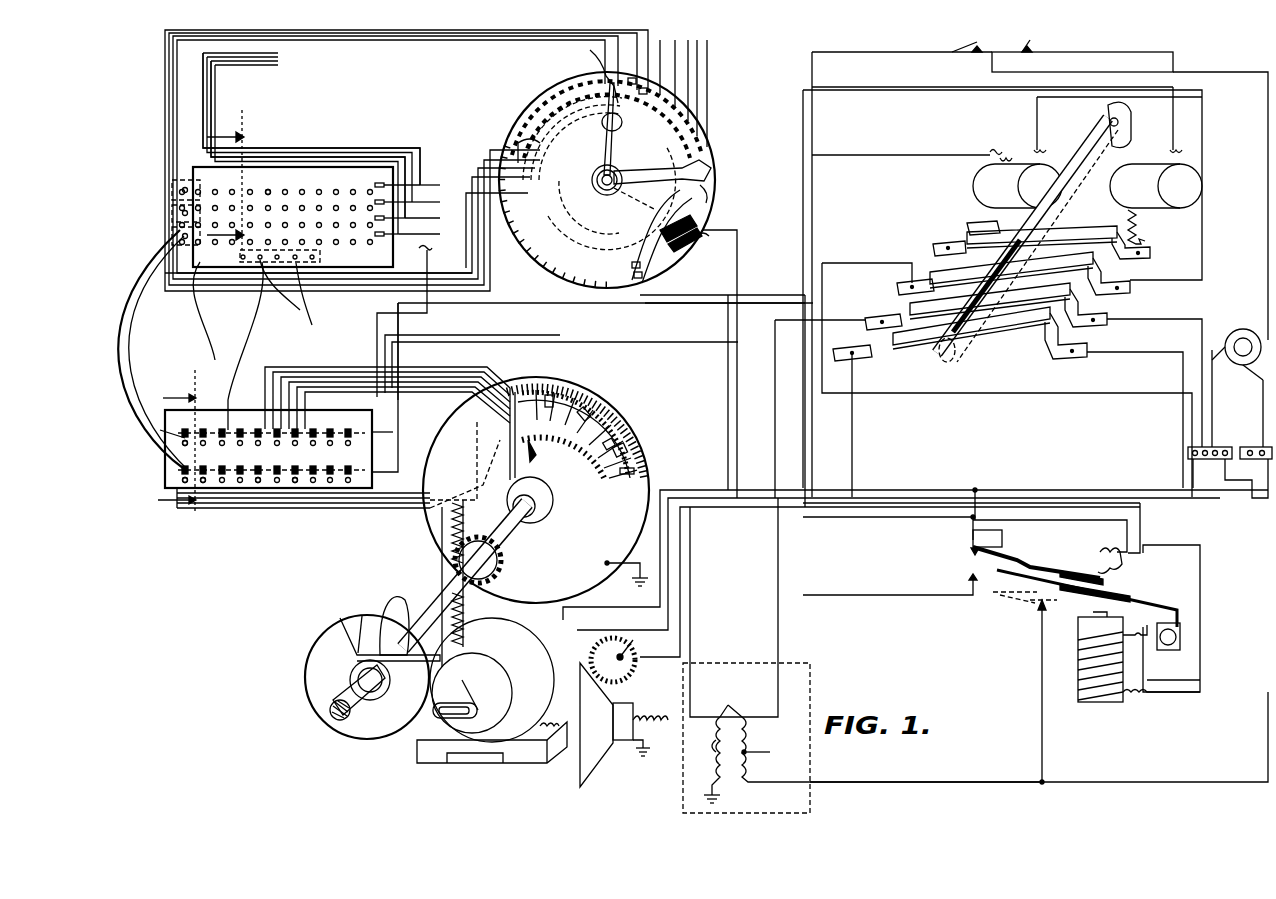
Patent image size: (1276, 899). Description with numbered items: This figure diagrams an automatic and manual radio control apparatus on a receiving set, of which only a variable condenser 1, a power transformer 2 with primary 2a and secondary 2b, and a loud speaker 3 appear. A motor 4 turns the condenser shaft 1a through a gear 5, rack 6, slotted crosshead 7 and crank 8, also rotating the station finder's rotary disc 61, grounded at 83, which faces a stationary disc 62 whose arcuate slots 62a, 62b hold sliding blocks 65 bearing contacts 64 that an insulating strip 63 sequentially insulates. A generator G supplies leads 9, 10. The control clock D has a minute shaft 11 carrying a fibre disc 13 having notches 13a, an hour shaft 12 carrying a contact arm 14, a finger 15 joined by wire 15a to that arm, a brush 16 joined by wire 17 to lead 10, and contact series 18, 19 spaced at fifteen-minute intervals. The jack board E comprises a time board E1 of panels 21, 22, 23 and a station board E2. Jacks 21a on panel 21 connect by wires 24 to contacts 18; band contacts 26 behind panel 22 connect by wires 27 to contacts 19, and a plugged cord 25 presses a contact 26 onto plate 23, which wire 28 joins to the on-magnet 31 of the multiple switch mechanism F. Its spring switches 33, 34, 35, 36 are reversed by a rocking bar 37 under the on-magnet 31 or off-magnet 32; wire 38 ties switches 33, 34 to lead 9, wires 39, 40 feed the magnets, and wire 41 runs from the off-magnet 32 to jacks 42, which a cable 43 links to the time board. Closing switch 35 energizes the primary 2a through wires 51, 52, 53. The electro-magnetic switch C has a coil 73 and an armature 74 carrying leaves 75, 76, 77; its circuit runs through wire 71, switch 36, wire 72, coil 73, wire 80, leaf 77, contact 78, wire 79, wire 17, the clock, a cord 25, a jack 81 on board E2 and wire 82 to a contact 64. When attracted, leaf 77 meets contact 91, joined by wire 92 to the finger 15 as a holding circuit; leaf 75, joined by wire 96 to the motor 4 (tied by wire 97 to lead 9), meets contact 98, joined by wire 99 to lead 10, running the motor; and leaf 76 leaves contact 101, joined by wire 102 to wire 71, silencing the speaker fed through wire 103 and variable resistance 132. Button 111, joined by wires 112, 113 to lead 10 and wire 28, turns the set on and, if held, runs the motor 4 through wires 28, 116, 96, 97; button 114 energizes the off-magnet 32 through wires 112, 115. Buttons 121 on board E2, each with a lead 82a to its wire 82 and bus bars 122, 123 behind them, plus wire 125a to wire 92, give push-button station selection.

The rotary variable condenser 1 is at (372, 668).
The shaft of the condenser 1a is at (340, 700).
The power transformer 2 is at (225, 179).
The primary of the transformer 2a is at (767, 751).
The secondary of the transformer 2b is at (716, 748).
The loud speaker 3 is at (624, 725).
The controlled motor 4 is at (492, 690).
The gear 5 is at (492, 570).
The rack 6 is at (442, 570).
The slotted crosshead 7 is at (433, 710).
The crank 8 is at (172, 449).
The lead 9 is at (1215, 447).
The lead 10 is at (1252, 447).
The minute shaft 11 is at (600, 188).
The hour shaft 12 is at (595, 182).
The fibre disc 13 is at (690, 163).
The notches 13a is at (565, 223).
The contact arm 14 is at (600, 165).
The finger 15 is at (700, 230).
The wire 15a is at (705, 205).
The resilient brush 16 is at (648, 268).
The wire 17 is at (718, 296).
The contacts 18 is at (667, 98).
The contacts 19 is at (683, 108).
The panel 21 is at (325, 160).
The jacks 21a is at (268, 190).
The panel 22 is at (345, 160).
The conducting plate 23 is at (380, 150).
The wire 24 is at (165, 84).
The cords 25 is at (195, 320).
The flexible band contacts 26 is at (170, 150).
The wire 27 is at (475, 160).
The wire 28 is at (433, 252).
The on-magnet 31 is at (1156, 186).
The off-magnet 32 is at (1017, 183).
The spring switch 33 is at (1062, 232).
The spring switch 34 is at (1055, 262).
The spring switch 35 is at (1040, 296).
The spring switch 36 is at (1015, 330).
The rocking bar 37 is at (1093, 128).
The wire 38 is at (890, 268).
The wire 39 is at (1144, 232).
The wire 40 is at (1037, 126).
The wire 41 is at (583, 318).
The jacks 42 is at (289, 292).
The cable 43 is at (308, 303).
The wire 51 is at (1268, 638).
The wire 52 is at (855, 314).
The wire 53 is at (1146, 316).
The rotary disc 61 is at (536, 490).
The stationary disc 62 is at (612, 425).
The arcuate slot 62a is at (622, 440).
The arcuate slot 62b is at (636, 472).
The insulating strip 63 is at (554, 492).
The electric contacts 64 is at (600, 400).
The sliding blocks 65 is at (550, 398).
The wire 71 is at (852, 418).
The wire 72 is at (1122, 356).
The coil 73 is at (1100, 702).
The armature 74 is at (1185, 605).
The flexible switch member 75 is at (1025, 605).
The flexible switch member 76 is at (995, 582).
The flexible switch member 77 is at (973, 552).
The contact 78 is at (973, 540).
The wire 79 is at (975, 498).
The wire 80 is at (1160, 560).
The jack 81 is at (295, 483).
The wire 82 is at (340, 505).
The lead 82a is at (212, 520).
The ground 83 is at (622, 563).
The contact 91 is at (960, 585).
The wire 92 is at (740, 232).
The wire 96 is at (1065, 480).
The wire 97 is at (565, 607).
The contact 98 is at (1033, 607).
The wire 99 is at (1042, 672).
The contact 101 is at (997, 572).
The wire 102 is at (865, 531).
The wire 103 is at (1050, 518).
The button 111 is at (1028, 48).
The wire 112 is at (1105, 60).
The wire 113 is at (1175, 58).
The button 114 is at (965, 40).
The wire 115 is at (895, 38).
The wire 116 is at (805, 445).
The buttons 121 is at (380, 432).
The bus bar 122 is at (500, 342).
The bus bar 123 is at (375, 348).
The wire 125a is at (400, 335).
The variable resistance 132 is at (632, 675).
The electro-magnetic switch C is at (1139, 657).
The control clock D is at (607, 180).
The jack board E is at (263, 308).
The time jack board E1 is at (310, 150).
The broadcast station board E2 is at (220, 428).
The multiple switch mechanism F is at (967, 230).
The alternating current generator G is at (1240, 413).